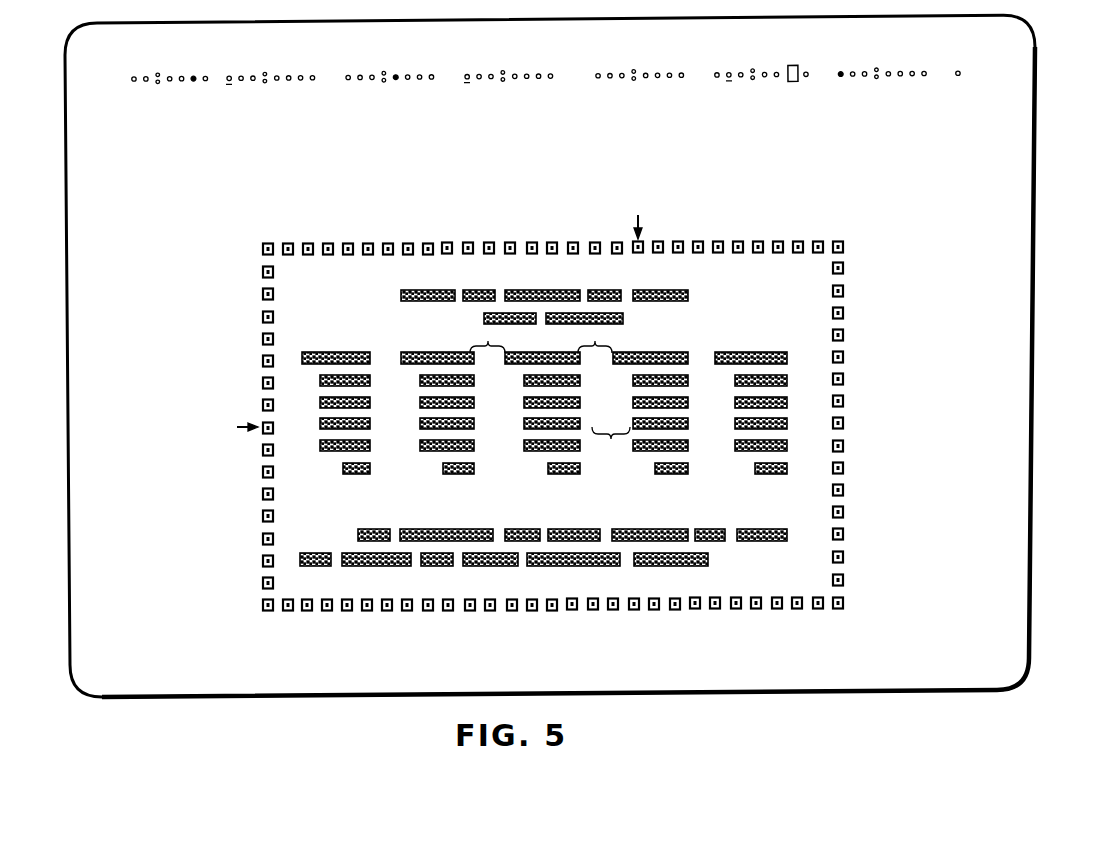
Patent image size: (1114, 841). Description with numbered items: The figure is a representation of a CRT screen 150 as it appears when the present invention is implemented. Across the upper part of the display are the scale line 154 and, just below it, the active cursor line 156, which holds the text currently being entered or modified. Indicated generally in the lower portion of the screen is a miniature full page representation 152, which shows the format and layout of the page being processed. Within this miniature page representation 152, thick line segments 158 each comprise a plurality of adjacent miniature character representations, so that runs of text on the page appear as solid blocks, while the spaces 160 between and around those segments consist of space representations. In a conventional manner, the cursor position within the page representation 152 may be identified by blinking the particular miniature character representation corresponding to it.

The CRT screen 150 is at (1033, 298).
The miniature full page representation 152 is at (846, 267).
The scale line 154 is at (975, 70).
The active cursor line 156 is at (907, 110).
The thick line segments 158 is at (688, 294).
The spaces 160 is at (514, 634).